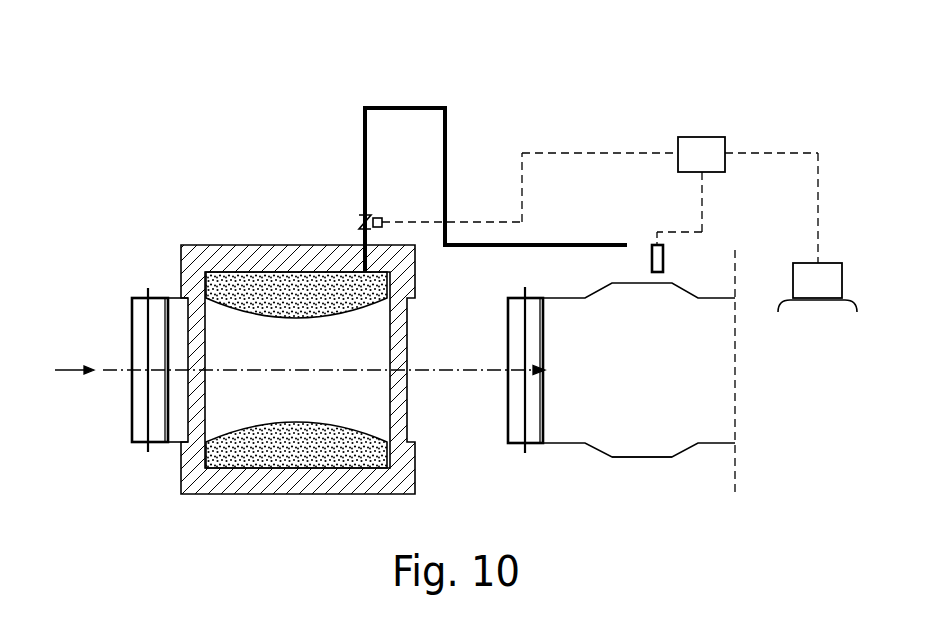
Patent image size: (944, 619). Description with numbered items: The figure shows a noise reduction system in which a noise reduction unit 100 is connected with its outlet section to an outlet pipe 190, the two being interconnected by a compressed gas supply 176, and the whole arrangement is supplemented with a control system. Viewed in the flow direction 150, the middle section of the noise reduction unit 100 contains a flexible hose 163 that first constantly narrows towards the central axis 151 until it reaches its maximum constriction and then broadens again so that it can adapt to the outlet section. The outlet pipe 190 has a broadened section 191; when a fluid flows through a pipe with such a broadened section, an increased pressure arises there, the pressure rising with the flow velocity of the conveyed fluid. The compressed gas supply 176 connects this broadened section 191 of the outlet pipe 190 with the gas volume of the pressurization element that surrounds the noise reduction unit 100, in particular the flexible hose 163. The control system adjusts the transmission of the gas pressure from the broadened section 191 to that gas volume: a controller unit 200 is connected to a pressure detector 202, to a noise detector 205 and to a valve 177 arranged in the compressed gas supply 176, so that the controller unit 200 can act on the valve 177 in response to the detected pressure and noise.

The noise reduction unit 100 is at (138, 249).
The flow direction 150 is at (70, 356).
The central axis 151 is at (108, 382).
The flexible hose 163 is at (252, 410).
The compressed gas supply 176 is at (405, 107).
The valve 177 is at (346, 222).
The outlet pipe 190 is at (589, 470).
The broadened section 191 is at (641, 470).
The controller unit 200 is at (700, 150).
The pressure detector 202 is at (655, 245).
The noise detector 205 is at (823, 275).